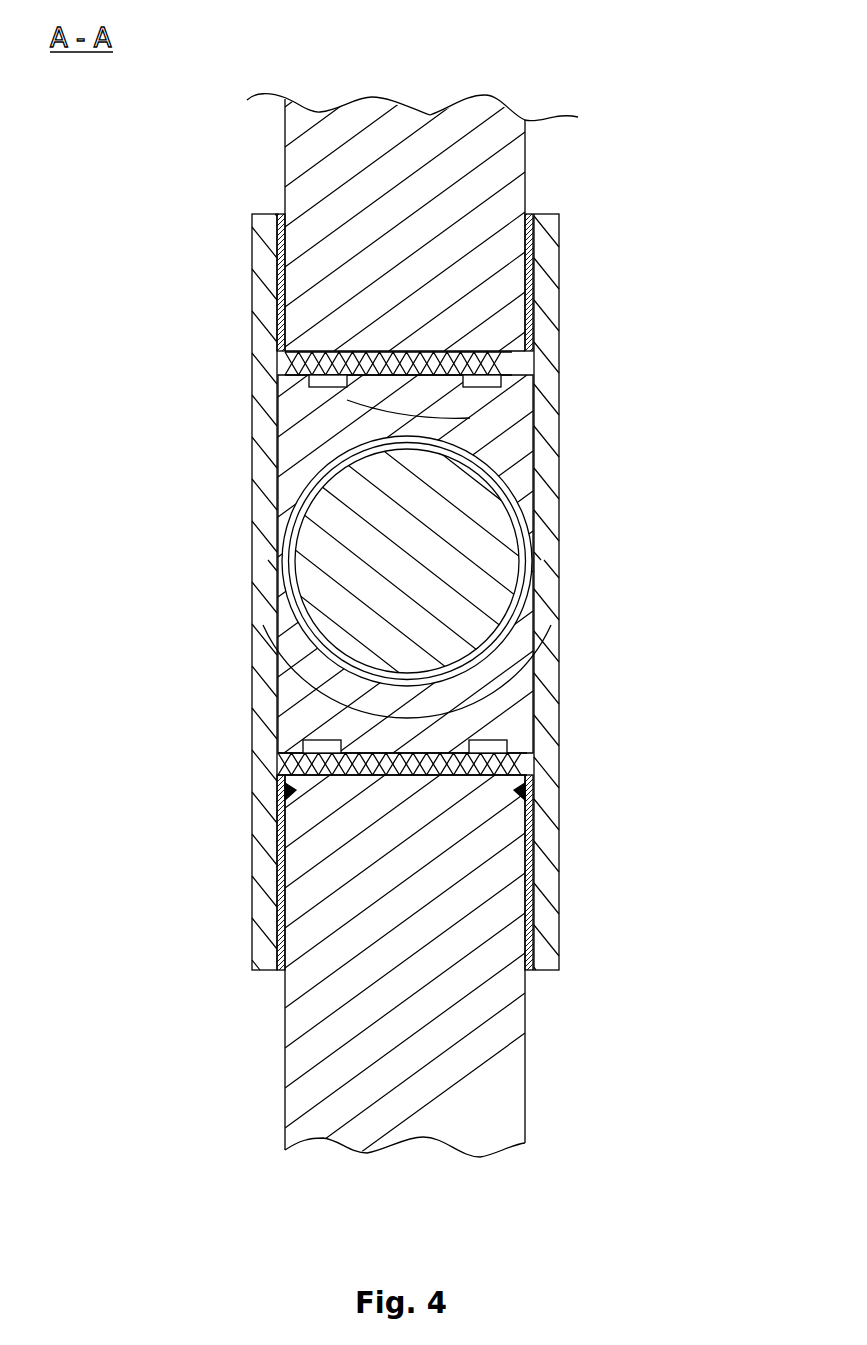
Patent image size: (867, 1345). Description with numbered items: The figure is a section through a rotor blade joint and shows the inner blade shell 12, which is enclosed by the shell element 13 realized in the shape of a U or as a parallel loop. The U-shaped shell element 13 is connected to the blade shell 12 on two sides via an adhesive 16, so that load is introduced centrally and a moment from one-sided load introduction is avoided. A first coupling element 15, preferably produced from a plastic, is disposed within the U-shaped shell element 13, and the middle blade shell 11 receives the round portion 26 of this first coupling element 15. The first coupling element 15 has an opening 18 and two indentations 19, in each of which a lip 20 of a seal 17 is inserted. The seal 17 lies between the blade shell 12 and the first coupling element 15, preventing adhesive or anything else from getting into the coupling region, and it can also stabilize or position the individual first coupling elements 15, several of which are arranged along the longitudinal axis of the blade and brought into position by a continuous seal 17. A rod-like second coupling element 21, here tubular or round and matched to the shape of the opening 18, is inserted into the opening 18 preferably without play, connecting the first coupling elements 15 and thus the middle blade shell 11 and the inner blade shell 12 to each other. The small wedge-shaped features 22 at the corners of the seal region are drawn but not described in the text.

The middle blade shell 11 is at (473, 1122).
The inner blade shell 12 is at (468, 115).
The shell element 13 is at (552, 382).
The first coupling element 15 is at (505, 472).
The adhesive 16 is at (280, 213).
The seal 17 is at (513, 358).
The opening 18 is at (297, 515).
The indentations 19 is at (347, 400).
The lip 20 is at (495, 378).
The second coupling element 21 is at (482, 555).
The corner wedge 22 is at (288, 788).
The round portion 26 is at (292, 620).